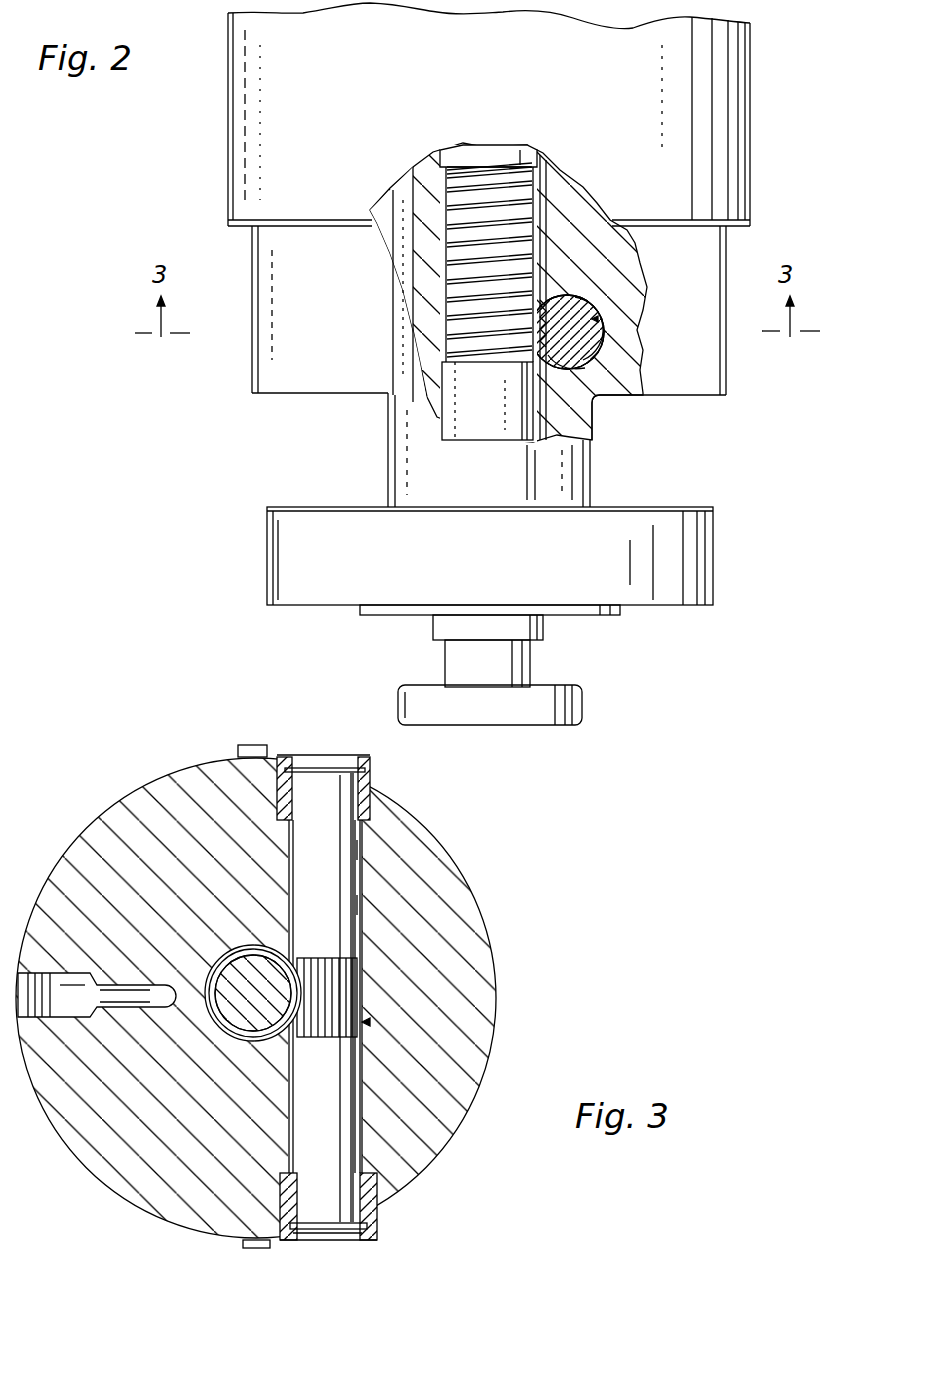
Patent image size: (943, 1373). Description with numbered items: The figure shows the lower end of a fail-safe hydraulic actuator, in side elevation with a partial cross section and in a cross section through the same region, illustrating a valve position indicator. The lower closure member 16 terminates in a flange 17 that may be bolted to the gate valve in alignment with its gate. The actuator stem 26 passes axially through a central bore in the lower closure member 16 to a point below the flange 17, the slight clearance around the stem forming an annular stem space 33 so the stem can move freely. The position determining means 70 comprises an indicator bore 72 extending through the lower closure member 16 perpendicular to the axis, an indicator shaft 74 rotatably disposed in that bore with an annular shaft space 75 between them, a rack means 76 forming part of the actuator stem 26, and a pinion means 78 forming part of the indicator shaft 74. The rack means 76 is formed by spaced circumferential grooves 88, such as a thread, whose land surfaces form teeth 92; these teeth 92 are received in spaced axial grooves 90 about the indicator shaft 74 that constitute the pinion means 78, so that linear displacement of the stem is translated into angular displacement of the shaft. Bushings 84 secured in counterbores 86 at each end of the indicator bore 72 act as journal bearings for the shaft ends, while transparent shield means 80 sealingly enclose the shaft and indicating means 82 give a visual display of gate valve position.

In FIG. 2, the lower closure member 16 is at (750, 142).
In FIG. 3, the lower closure member 16 is at (458, 871).
In FIG. 2, the flange 17 is at (690, 553).
In FIG. 2, the actuator stem 26 is at (535, 261).
In FIG. 3, the actuator stem 26 is at (253, 964).
In FIG. 2, the annular stem space 33 is at (553, 178).
In FIG. 3, the annular stem space 33 is at (232, 951).
In FIG. 2, the position determining means 70 is at (176, 110).
In FIG. 3, the position determining means 70 is at (128, 752).
In FIG. 2, the indicator bore 72 is at (597, 333).
In FIG. 3, the indicator bore 72 is at (360, 823).
In FIG. 2, the indicator shaft 74 is at (555, 336).
In FIG. 3, the indicator shaft 74 is at (358, 854).
In FIG. 2, the annular shaft space 75 is at (575, 360).
In FIG. 3, the annular shaft space 75 is at (360, 907).
In FIG. 2, the rack means 76 is at (536, 216).
In FIG. 3, the rack means 76 is at (284, 1044).
In FIG. 2, the pinion means 78 is at (600, 319).
In FIG. 3, the pinion means 78 is at (370, 1022).
In FIG. 3, the transparent shield means 80 is at (330, 753).
In FIG. 3, the indicating means 82 is at (269, 735).
In FIG. 3, the bushing 84 is at (372, 769).
In FIG. 3, the counterbore 86 is at (368, 1193).
In FIG. 2, the circumferential grooves 88 is at (487, 352).
In FIG. 2, the axial grooves 90 is at (560, 302).
In FIG. 3, the axial grooves 90 is at (345, 978).
In FIG. 2, the teeth 92 is at (470, 347).